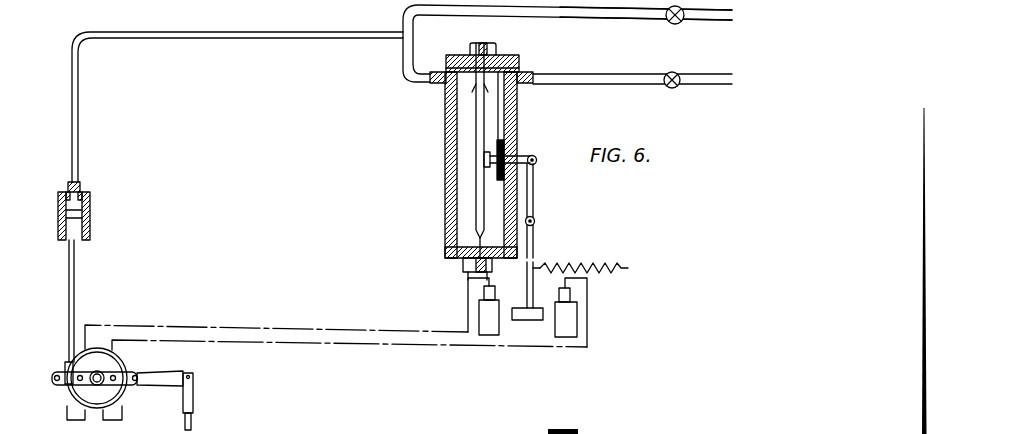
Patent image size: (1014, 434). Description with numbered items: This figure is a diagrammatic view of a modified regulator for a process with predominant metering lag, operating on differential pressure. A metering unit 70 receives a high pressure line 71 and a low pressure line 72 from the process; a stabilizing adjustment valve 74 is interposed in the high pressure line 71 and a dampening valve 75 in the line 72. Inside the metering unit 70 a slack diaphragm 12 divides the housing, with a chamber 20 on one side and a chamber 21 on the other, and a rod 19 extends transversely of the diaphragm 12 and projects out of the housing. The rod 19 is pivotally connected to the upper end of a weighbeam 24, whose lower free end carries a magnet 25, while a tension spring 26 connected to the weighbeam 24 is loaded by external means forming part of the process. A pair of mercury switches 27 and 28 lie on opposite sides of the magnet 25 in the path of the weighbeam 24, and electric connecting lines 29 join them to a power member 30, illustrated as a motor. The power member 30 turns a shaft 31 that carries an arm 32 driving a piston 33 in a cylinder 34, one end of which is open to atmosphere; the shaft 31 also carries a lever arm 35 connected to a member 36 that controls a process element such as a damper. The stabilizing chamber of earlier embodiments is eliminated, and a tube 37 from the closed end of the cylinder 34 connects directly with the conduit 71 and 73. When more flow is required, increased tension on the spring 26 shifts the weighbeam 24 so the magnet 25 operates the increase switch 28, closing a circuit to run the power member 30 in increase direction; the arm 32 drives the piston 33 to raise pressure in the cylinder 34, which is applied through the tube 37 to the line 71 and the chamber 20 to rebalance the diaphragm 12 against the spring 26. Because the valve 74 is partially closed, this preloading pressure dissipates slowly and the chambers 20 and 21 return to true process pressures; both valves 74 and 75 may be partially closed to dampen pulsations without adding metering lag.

The slack diaphragm 12 is at (446, 240).
The rod 19 is at (522, 162).
The chamber 20 is at (463, 190).
The chamber 21 is at (498, 112).
The weighbeam 24 is at (534, 193).
The magnet 25 is at (527, 321).
The tension spring 26 is at (580, 265).
The mercury switch 27 is at (480, 304).
The mercury switch 28 is at (572, 318).
The electric connecting lines 29 is at (318, 331).
The power member 30 is at (107, 367).
The shaft 31 is at (101, 386).
The arm 32 is at (63, 380).
The piston 33 is at (88, 212).
The cylinder 34 is at (80, 206).
The lever arm 35 is at (173, 380).
The controller member 36 is at (191, 421).
The tube 37 is at (135, 38).
The metering unit 70 is at (443, 151).
The high pressure line 71 is at (583, 19).
The low pressure line 72 is at (597, 84).
The conduit 73 is at (402, 41).
The stabilizing adjustment valve 74 is at (672, 23).
The dampening valve 75 is at (672, 88).